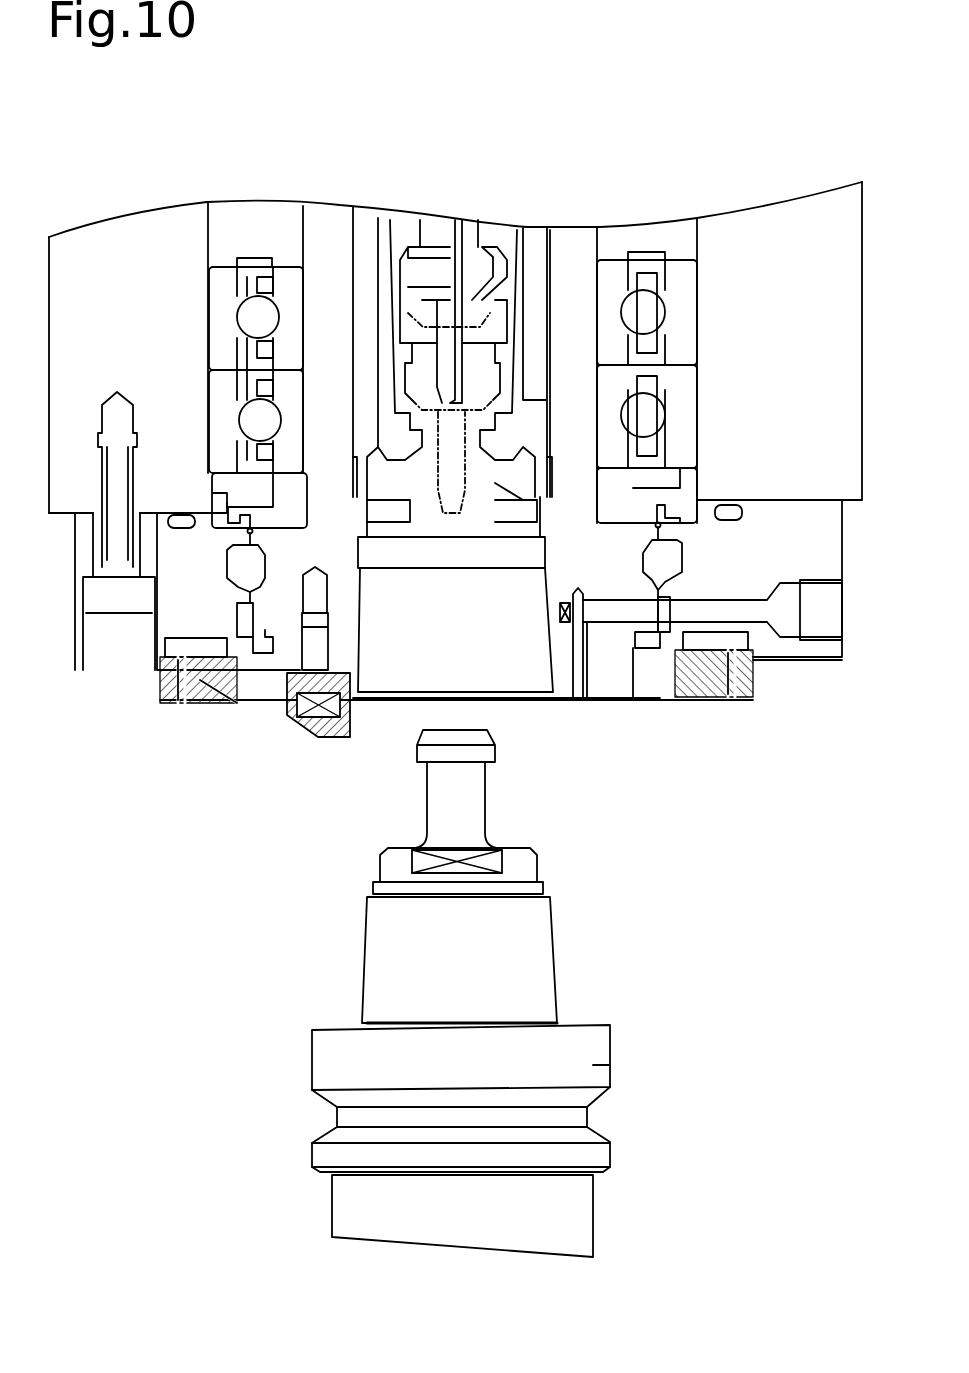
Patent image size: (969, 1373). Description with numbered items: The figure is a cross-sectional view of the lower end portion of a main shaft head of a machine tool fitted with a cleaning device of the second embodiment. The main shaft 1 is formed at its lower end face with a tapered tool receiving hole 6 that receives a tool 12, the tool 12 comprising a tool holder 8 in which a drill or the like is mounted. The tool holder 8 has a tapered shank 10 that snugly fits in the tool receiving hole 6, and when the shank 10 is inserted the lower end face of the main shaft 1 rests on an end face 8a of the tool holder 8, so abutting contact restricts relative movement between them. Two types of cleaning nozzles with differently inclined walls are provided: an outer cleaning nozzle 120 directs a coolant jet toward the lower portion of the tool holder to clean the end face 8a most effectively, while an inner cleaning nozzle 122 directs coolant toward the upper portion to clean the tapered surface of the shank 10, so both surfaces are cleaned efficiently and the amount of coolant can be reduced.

The main shaft 1 is at (455, 462).
The tool receiving hole 6 is at (521, 700).
The tool holder 8 is at (399, 1097).
The end face of tool holder 8a is at (323, 1027).
The tapered shank 10 is at (540, 965).
The tool 12 is at (446, 993).
The outer cleaning nozzle 120 is at (200, 702).
The inner cleaning nozzle 122 is at (253, 705).